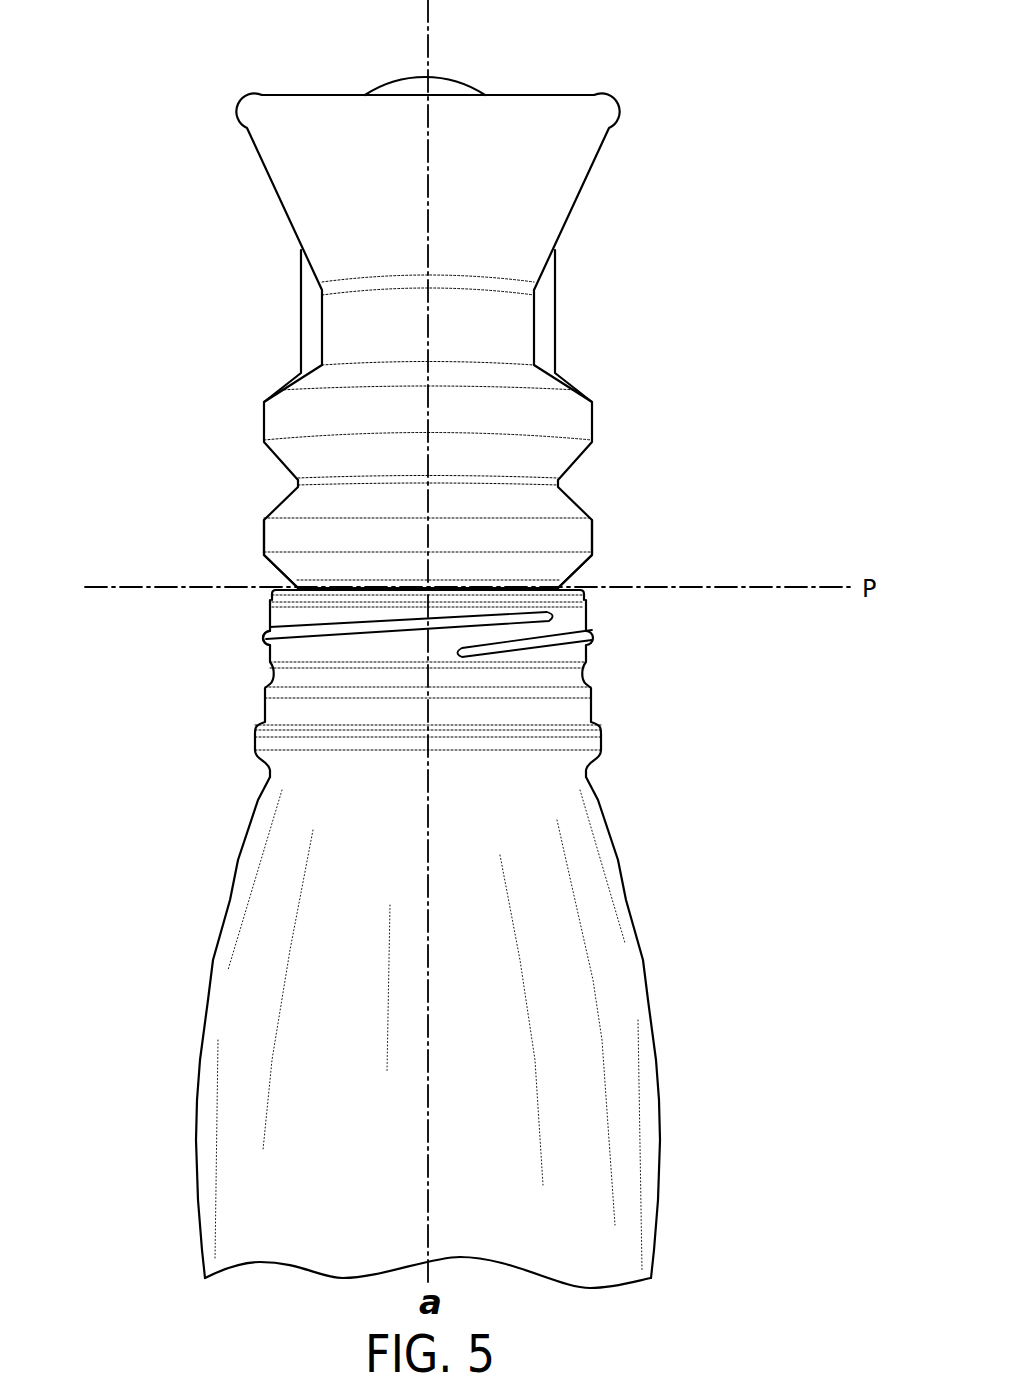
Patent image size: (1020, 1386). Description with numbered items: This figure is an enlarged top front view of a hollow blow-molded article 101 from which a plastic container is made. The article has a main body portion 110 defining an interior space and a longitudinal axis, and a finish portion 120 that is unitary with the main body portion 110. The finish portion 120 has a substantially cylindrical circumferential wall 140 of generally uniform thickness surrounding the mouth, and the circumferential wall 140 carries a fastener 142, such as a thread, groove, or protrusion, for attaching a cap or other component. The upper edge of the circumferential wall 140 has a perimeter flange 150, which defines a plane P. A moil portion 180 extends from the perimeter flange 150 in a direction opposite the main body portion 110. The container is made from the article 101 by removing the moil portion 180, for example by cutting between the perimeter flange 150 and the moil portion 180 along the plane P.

The hollow blow-molded article 101 is at (198, 100).
The main body portion 110 is at (805, 1353).
The finish portion 120 is at (770, 775).
The circumferential wall 140 is at (300, 617).
The fastener 142 is at (258, 639).
The perimeter flange 150 is at (308, 587).
The moil portion 180 is at (770, 82).